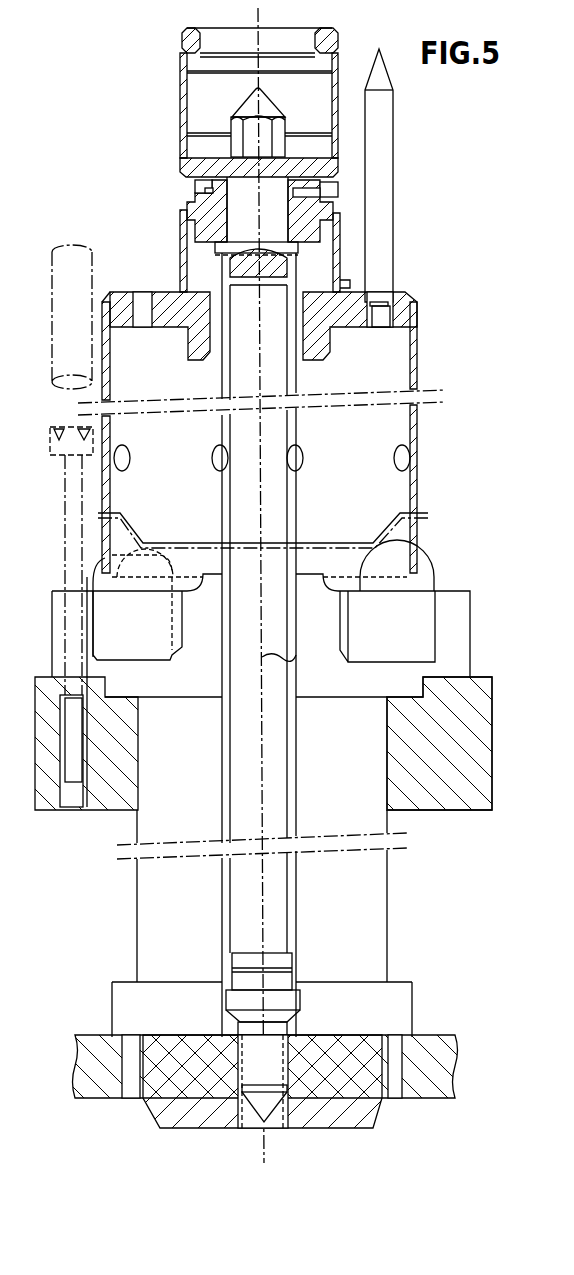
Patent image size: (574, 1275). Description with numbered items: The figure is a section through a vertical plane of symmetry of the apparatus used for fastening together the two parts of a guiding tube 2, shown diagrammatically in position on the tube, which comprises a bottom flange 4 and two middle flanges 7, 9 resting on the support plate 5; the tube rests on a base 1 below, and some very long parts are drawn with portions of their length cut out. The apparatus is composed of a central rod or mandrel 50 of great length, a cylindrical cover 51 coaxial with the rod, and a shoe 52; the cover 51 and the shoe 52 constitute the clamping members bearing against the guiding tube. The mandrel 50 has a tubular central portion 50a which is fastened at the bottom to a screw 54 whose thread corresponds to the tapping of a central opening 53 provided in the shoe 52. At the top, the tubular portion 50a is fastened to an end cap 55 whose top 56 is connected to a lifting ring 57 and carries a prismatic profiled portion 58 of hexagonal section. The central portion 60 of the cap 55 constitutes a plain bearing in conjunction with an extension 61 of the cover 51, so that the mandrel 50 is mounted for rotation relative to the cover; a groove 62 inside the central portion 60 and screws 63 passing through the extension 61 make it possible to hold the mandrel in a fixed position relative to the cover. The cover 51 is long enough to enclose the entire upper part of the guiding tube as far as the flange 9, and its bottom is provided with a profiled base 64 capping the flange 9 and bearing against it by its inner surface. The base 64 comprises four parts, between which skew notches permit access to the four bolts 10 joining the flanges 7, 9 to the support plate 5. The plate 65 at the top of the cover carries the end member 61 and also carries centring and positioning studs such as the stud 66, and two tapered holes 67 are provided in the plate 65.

The base 1 is at (423, 1078).
The guiding tube 2 is at (398, 542).
The bottom flange 4 is at (397, 1012).
The support plate 5 is at (448, 790).
The middle flange 7 is at (67, 662).
The middle flange 9 is at (67, 605).
The bolts 10 is at (80, 518).
The central rod or mandrel 50 is at (260, 808).
The tubular central portion 50a is at (297, 437).
The cylindrical cover 51 is at (417, 492).
The shoe 52 is at (335, 1112).
The central opening 53 is at (282, 1120).
The screw 54 is at (257, 1070).
The end cap 55 is at (268, 250).
The top 56 is at (180, 162).
The lifting ring 57 is at (180, 33).
The prismatic profiled portion 58 is at (237, 128).
The central portion 60 is at (217, 223).
The extension 61 is at (180, 257).
The groove 62 is at (217, 190).
The screws 63 is at (333, 182).
The profiled base 64 is at (407, 613).
The plate 65 is at (402, 300).
The centring and positioning studs 66 is at (380, 263).
The tapered holes 67 is at (143, 303).